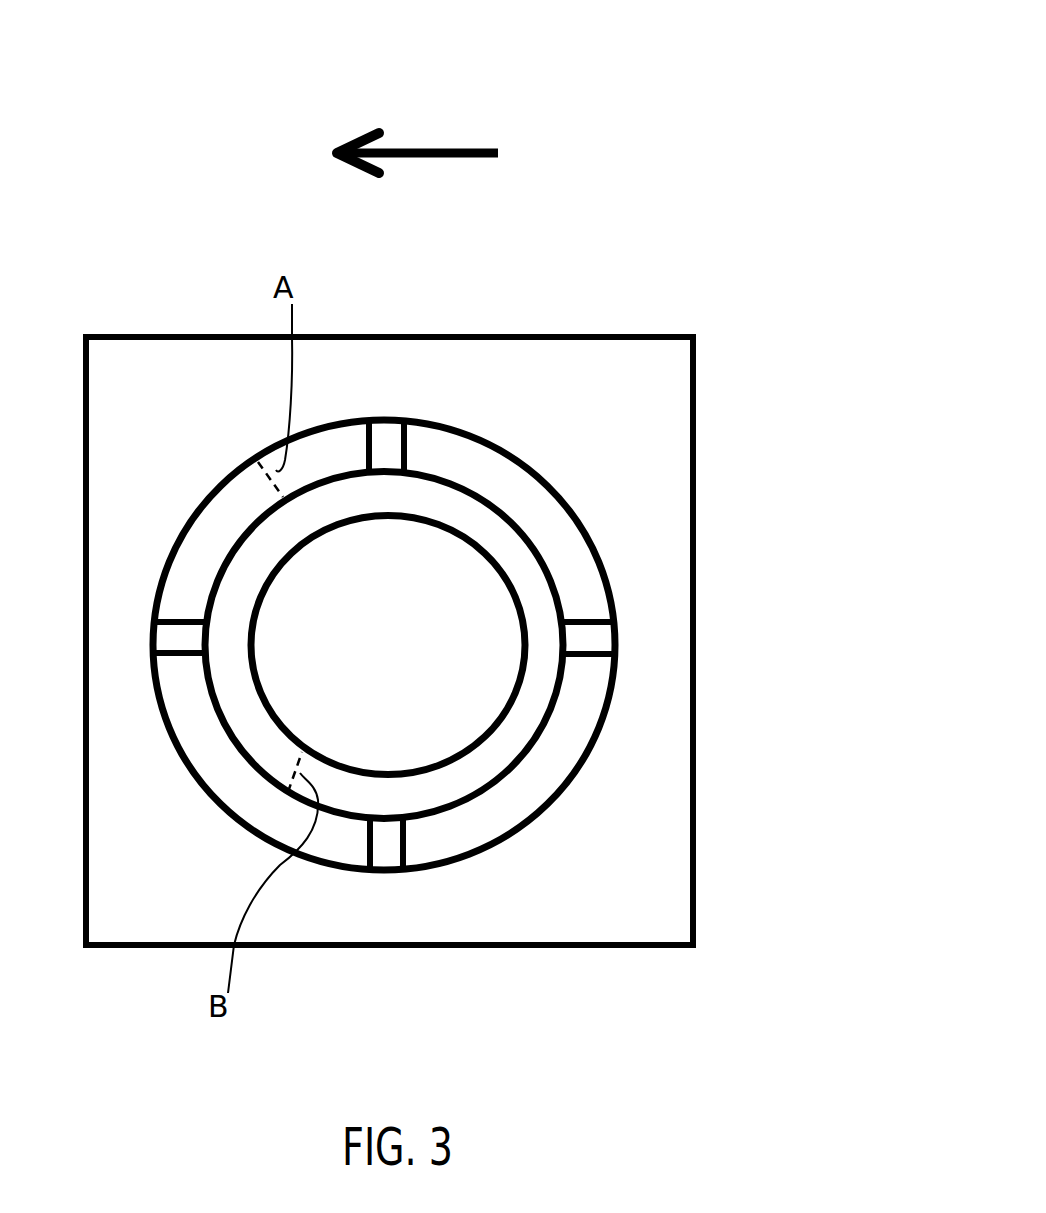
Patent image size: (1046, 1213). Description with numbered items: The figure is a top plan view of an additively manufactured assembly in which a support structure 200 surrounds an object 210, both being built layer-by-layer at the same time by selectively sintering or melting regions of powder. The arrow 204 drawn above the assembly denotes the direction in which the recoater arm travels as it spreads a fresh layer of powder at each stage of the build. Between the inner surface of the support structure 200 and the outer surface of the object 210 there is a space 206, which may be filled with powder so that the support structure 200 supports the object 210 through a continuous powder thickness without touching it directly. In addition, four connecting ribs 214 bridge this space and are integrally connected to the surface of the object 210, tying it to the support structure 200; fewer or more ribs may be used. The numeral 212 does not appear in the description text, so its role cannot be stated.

The support structure 200 is at (660, 385).
The arrows 204 is at (463, 148).
The space 206 is at (588, 577).
The object 210 is at (502, 740).
The central region 212 is at (422, 630).
The connecting rib 214 is at (602, 642).